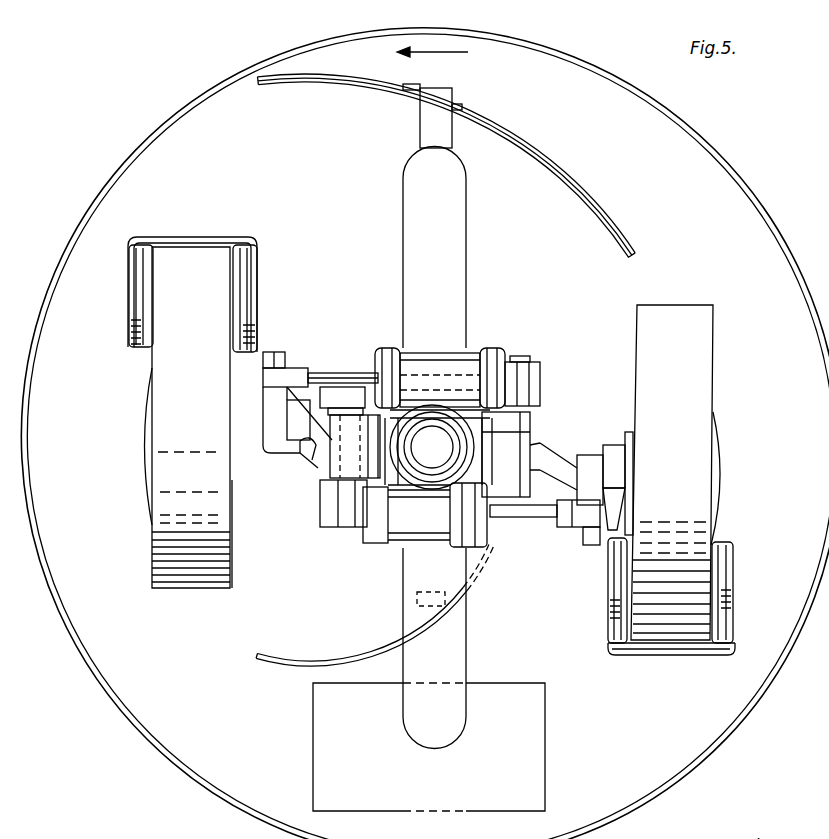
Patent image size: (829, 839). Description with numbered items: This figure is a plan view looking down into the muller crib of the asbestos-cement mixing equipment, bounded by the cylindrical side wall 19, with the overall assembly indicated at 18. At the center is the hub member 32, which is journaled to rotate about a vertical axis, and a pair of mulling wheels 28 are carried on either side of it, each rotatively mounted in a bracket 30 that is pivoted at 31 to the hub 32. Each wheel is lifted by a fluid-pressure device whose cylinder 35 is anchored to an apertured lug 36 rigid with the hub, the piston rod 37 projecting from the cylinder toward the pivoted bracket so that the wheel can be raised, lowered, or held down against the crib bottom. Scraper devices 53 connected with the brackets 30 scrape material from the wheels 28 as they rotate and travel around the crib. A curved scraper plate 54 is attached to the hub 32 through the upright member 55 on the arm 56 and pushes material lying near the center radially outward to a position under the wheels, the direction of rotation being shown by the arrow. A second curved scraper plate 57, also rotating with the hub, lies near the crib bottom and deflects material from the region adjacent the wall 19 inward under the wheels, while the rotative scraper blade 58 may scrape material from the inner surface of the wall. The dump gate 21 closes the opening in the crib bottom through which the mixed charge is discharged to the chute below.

The housing ring 18 is at (124, 754).
The cylindrical side wall 19 is at (252, 80).
The dump gate 21 is at (530, 759).
The mulling wheel 28 is at (150, 550).
The bracket 30 is at (306, 445).
The pivot 31 is at (518, 525).
The hub member 32 is at (490, 432).
The cylinder 35 is at (460, 368).
The apertured lug 36 is at (524, 372).
The piston rod 37 is at (344, 373).
The scraper device 53 is at (255, 260).
The curved scraper plate 54 is at (334, 657).
The upright member 55 is at (430, 583).
The arm 56 is at (458, 655).
The curved scraper plate 57 is at (571, 190).
The rotative scraper blade 58 is at (466, 832).